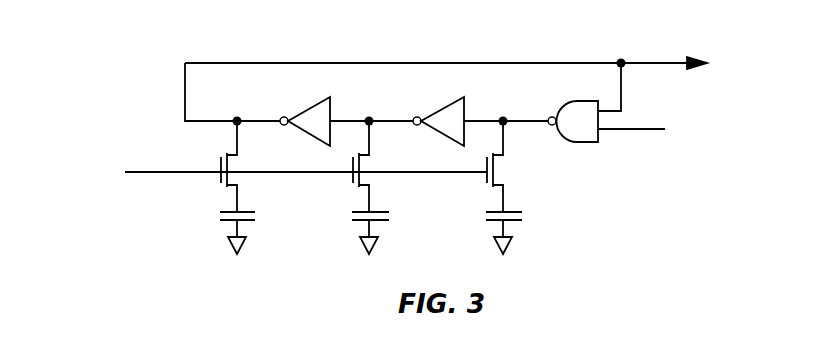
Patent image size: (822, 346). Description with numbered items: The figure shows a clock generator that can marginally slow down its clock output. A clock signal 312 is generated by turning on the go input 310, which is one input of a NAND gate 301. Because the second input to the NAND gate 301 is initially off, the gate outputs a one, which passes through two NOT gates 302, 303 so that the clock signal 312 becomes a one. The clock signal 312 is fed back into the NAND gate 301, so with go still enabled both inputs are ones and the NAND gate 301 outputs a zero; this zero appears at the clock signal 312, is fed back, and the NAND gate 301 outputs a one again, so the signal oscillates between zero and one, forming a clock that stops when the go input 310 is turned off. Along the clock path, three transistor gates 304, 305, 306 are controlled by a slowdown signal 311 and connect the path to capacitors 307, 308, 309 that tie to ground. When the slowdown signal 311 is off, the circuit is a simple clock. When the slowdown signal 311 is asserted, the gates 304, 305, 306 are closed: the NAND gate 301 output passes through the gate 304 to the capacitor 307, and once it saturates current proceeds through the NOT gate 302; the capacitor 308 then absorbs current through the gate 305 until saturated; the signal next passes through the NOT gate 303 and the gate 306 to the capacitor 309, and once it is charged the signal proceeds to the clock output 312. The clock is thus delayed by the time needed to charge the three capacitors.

The NAND gate 301 is at (567, 141).
The NOT gate 302 is at (458, 100).
The NOT gate 303 is at (326, 100).
The gate 304 is at (486, 186).
The gate 305 is at (352, 186).
The gate 306 is at (220, 186).
The capacitor 307 is at (491, 228).
The capacitor 308 is at (357, 228).
The capacitor 309 is at (222, 228).
The go input 310 is at (650, 128).
The slowdown signal 311 is at (153, 171).
The clock signal 312 is at (655, 62).